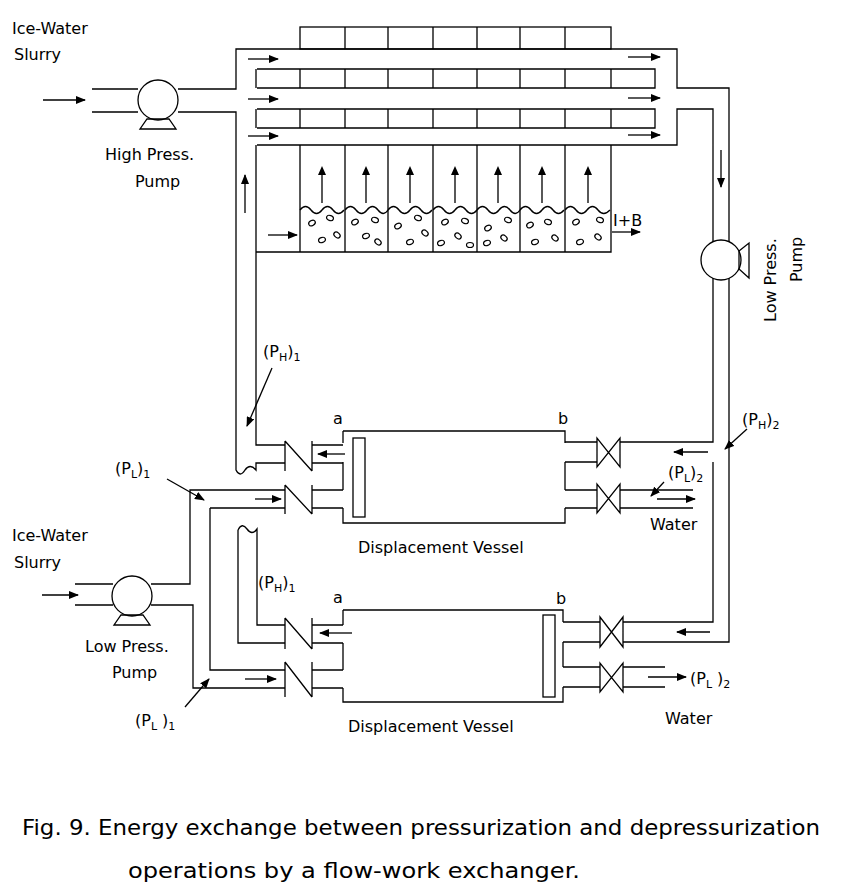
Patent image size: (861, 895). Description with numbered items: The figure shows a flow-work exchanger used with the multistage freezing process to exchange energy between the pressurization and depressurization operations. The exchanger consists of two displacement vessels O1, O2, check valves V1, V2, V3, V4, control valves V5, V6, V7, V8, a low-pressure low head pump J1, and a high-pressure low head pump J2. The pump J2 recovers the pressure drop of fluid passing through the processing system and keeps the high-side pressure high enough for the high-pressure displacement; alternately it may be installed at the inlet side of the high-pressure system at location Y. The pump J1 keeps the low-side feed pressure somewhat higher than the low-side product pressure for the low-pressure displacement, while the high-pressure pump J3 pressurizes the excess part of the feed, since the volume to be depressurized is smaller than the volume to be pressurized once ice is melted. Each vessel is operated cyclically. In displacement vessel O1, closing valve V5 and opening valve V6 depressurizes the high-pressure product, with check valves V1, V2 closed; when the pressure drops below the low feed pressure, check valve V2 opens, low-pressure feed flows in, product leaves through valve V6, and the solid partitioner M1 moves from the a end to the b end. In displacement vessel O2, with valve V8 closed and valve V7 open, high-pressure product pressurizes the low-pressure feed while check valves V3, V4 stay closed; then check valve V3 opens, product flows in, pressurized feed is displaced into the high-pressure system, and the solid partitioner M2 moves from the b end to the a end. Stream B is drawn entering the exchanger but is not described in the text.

The low-pressure low head pump J1 is at (132, 591).
The high-pressure low head pump J2 is at (712, 260).
The high-pressure pump J3 is at (158, 95).
The check valve V1 is at (298, 442).
The check valve V2 is at (298, 519).
The check valve V3 is at (298, 624).
The check valve V4 is at (298, 697).
The control valve V5 is at (608, 438).
The control valve V6 is at (608, 516).
The control valve V7 is at (610, 618).
The control valve V8 is at (611, 697).
The displacement vessel O1 is at (454, 464).
The displacement vessel O2 is at (453, 645).
The solid partitioner M1 is at (368, 481).
The solid partitioner M2 is at (539, 678).
The location Y is at (245, 314).
The brine stream B is at (281, 223).